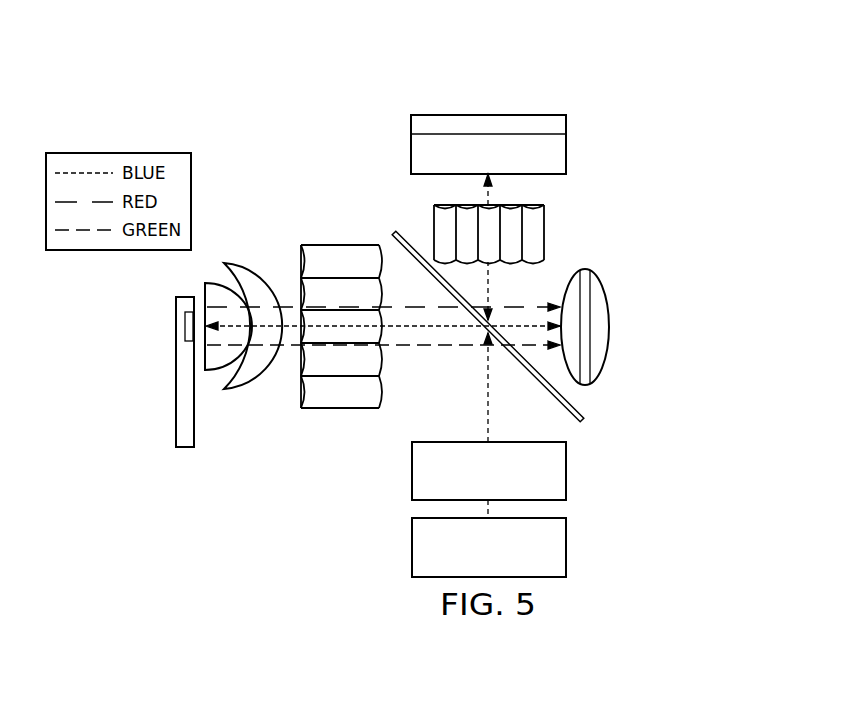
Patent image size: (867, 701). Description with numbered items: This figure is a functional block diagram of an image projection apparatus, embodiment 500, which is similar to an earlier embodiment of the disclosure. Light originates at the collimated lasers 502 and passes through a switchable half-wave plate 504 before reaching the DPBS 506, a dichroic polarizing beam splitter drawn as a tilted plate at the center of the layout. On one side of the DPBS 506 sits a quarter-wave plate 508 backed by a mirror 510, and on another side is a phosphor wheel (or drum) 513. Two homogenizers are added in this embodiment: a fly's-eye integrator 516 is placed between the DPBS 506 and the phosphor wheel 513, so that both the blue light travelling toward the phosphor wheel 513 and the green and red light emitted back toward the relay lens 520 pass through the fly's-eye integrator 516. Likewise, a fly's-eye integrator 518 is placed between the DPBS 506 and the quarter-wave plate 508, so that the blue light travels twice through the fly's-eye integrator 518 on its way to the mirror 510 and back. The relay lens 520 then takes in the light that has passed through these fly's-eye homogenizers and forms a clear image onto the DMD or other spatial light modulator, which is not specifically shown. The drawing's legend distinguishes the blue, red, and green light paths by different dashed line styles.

The embodiment 500 is at (283, 158).
The collimated lasers 502 is at (566, 548).
The switchable half-wave plate 504 is at (566, 472).
The DPBS 506 is at (578, 398).
The quarter-wave plate 508 is at (566, 153).
The mirror 510 is at (566, 124).
The phosphor wheel 513 is at (175, 371).
The fly's-eye integrator 516 is at (340, 410).
The fly's-eye integrator 518 is at (545, 232).
The relay lens 520 is at (610, 340).